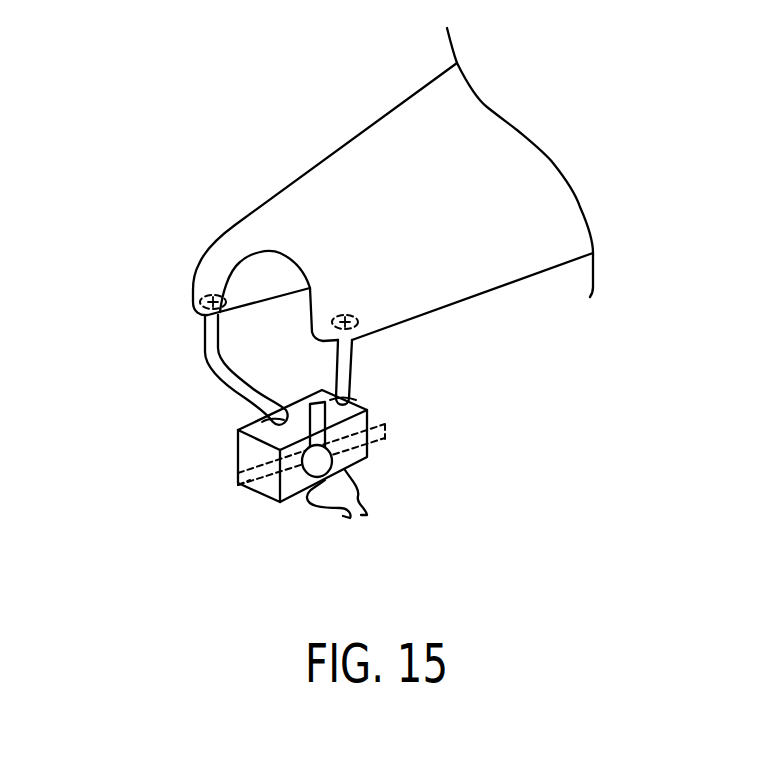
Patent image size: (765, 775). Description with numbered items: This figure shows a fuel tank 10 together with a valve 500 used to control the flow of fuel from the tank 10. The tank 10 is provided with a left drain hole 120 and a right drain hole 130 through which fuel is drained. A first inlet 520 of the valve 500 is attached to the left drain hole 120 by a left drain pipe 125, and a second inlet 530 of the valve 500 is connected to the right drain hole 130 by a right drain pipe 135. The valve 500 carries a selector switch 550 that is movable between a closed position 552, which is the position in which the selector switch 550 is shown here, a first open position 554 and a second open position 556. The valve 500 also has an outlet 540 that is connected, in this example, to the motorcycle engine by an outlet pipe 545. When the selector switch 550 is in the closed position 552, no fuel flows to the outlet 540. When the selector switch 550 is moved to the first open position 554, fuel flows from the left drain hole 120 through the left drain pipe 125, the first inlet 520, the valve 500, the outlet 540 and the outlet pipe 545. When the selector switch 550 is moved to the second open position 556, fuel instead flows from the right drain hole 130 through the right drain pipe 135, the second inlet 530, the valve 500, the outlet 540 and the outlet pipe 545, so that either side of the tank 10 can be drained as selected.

The tank 10 is at (354, 100).
The left drain hole 120 is at (214, 282).
The left drain pipe 125 is at (202, 350).
The right drain hole 130 is at (346, 313).
The right drain pipe 135 is at (355, 367).
The valve 500 is at (298, 443).
The first inlet 520 is at (268, 420).
The second inlet 530 is at (355, 402).
The outlet 540 is at (308, 500).
The outlet pipe 545 is at (362, 497).
The selector switch 550 is at (334, 465).
The closed position 552 is at (313, 398).
The first open position 554 is at (238, 487).
The second open position 556 is at (385, 436).